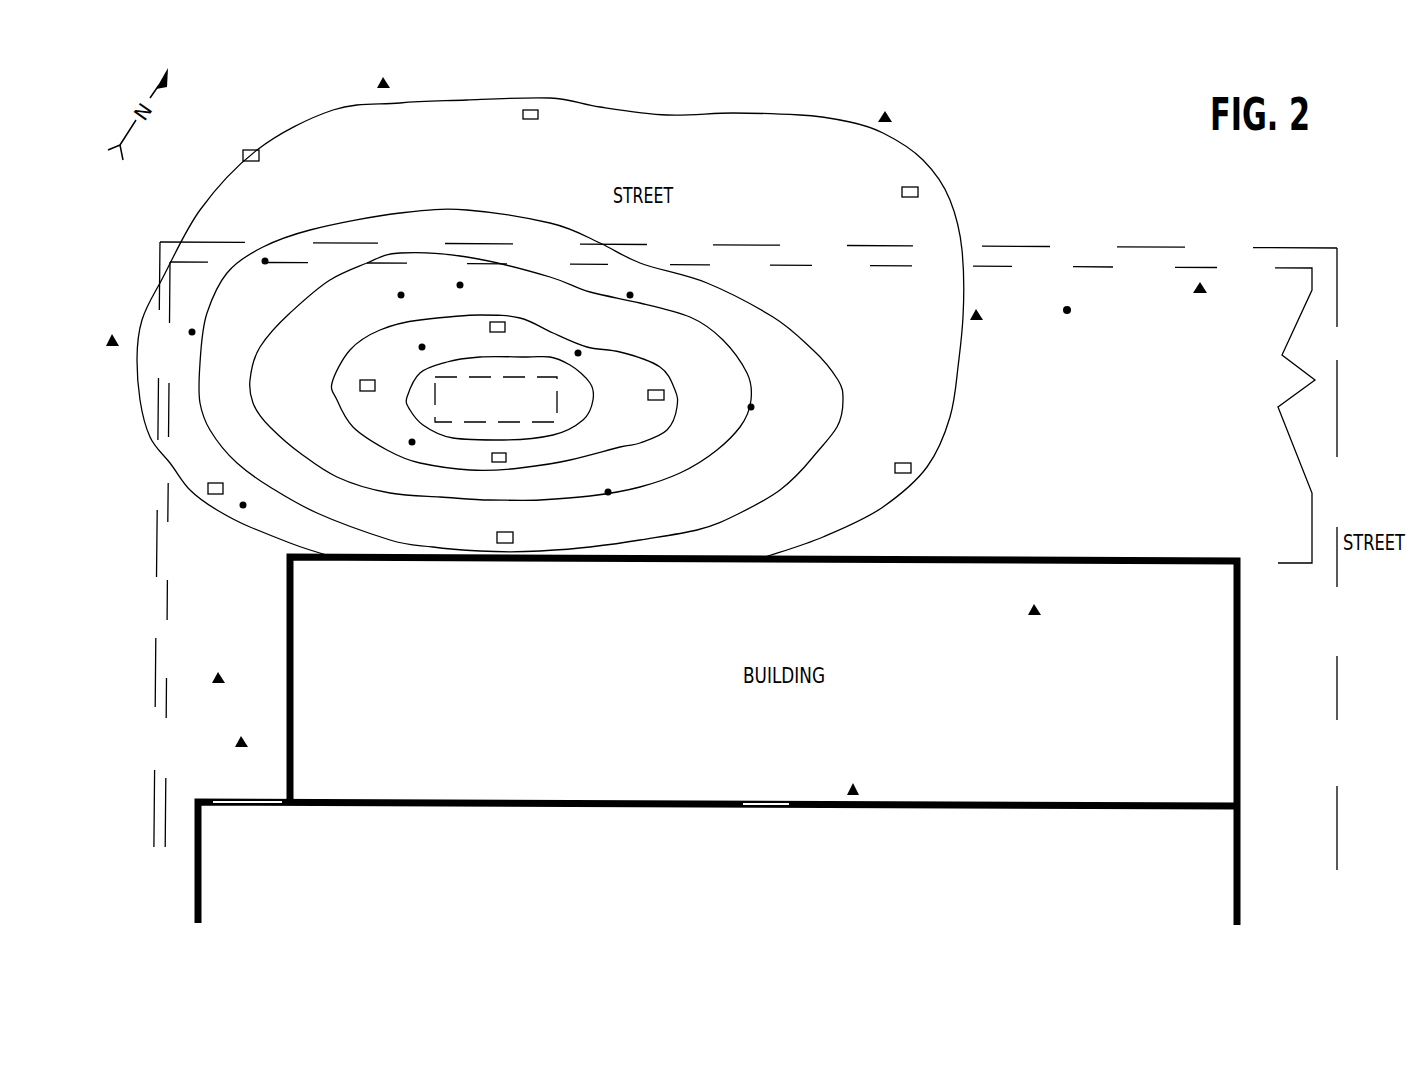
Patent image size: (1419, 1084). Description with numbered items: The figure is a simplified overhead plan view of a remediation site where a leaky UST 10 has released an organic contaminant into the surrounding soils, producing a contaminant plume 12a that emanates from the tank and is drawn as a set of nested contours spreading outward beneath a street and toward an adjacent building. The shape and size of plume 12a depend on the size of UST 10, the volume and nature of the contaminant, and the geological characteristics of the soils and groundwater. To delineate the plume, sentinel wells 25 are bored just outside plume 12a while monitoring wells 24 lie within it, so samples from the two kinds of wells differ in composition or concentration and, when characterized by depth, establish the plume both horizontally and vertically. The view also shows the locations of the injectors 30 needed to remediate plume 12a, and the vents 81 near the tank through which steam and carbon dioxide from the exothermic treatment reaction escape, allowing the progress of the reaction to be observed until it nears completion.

The leaky UST 10 is at (496, 399).
The contaminant plume 12a is at (956, 365).
The monitoring wells 24 is at (479, 388).
The sentinel wells 25 is at (668, 435).
The injectors 30 is at (566, 326).
The vents 81 is at (518, 398).